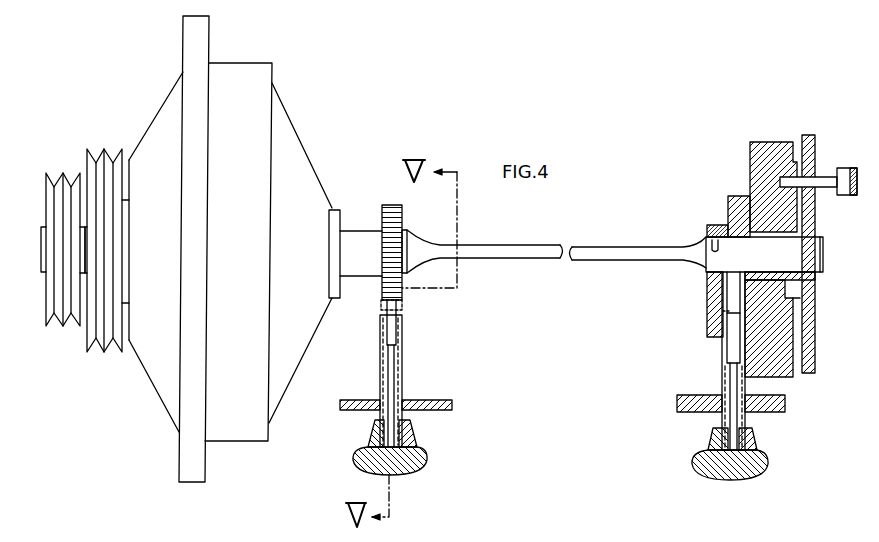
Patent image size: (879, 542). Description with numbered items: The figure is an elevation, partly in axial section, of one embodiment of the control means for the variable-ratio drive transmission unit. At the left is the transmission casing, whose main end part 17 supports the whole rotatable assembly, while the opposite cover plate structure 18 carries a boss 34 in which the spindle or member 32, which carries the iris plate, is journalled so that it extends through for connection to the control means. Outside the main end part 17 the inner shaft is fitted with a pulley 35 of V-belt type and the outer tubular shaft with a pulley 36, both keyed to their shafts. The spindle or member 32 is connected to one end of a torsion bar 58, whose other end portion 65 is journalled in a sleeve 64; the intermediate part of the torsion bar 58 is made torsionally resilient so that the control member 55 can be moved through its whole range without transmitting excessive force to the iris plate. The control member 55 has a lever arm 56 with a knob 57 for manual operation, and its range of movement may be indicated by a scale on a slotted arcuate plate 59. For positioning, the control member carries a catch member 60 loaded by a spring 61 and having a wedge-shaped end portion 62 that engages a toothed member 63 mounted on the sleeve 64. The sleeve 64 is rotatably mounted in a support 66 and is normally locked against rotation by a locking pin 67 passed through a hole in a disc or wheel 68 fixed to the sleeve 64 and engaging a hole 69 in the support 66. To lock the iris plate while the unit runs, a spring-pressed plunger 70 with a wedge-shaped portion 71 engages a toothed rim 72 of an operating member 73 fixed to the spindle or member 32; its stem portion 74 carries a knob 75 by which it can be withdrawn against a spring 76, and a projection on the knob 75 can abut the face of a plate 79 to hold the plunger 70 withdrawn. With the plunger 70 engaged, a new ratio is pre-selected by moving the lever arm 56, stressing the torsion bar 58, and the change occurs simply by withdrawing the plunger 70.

The main end part 17 is at (171, 100).
The cover plate structure 18 is at (284, 130).
The spindle or member 32 is at (357, 228).
The boss 34 is at (337, 208).
The pulley 35 is at (64, 172).
The pulley 36 is at (104, 150).
The control member 55 is at (710, 327).
The lever arm 56 is at (726, 375).
The knob 57 is at (714, 448).
The torsion bar 58 is at (612, 249).
The slotted arcuate plate 59 is at (777, 414).
The catch member 60 is at (733, 345).
The spring 61 is at (747, 388).
The wedge-shaped end portion 62 is at (722, 311).
The toothed member 63 is at (728, 207).
The sleeve 64 is at (810, 276).
The end portion 65 is at (815, 249).
The support 66 is at (785, 323).
The locking pin 67 is at (822, 180).
The disc or wheel 68 is at (815, 205).
The hole 69 is at (780, 178).
The spring-pressed plunger 70 is at (397, 330).
The wedge-shaped portion 71 is at (404, 306).
The toothed rim 72 is at (398, 208).
The operating member 73 is at (405, 225).
The stem portion 74 is at (390, 370).
The knob 75 is at (410, 448).
The spring 76 is at (398, 358).
The plate 79 is at (441, 412).